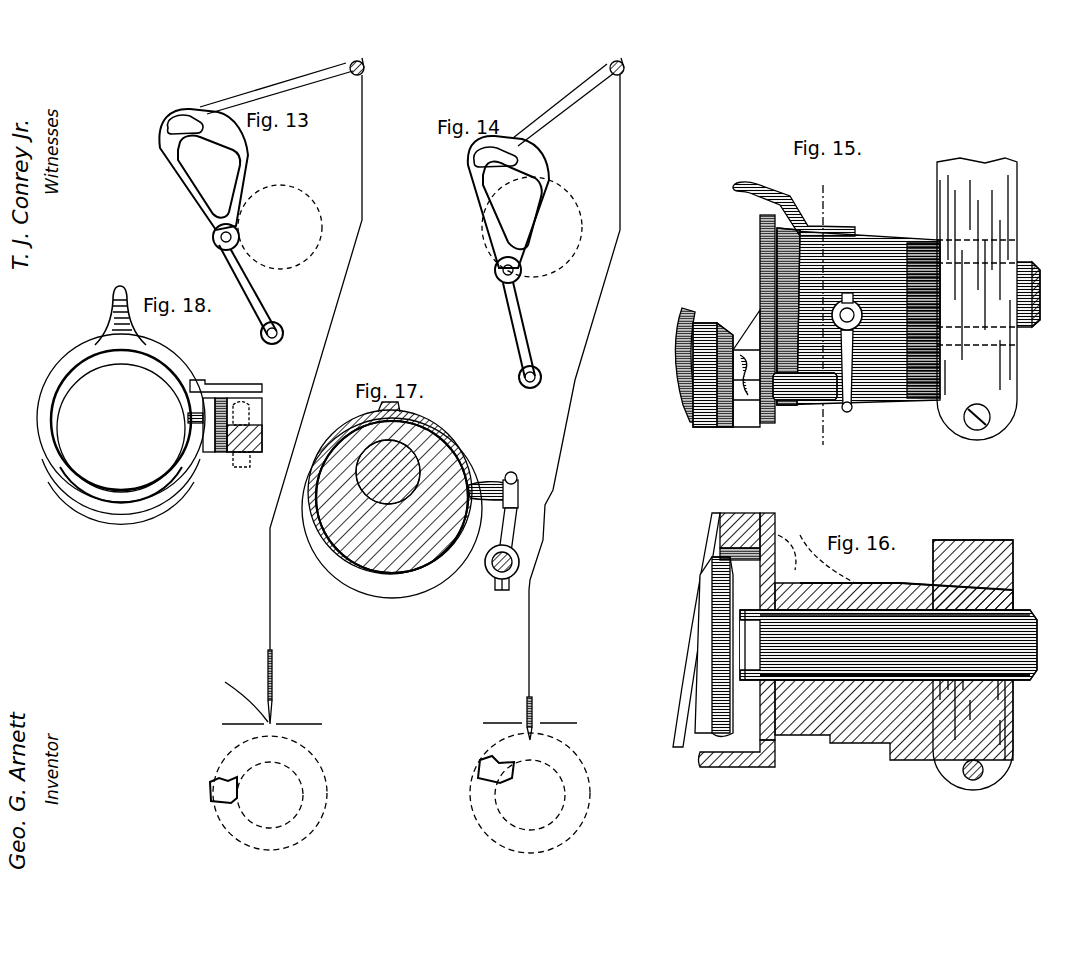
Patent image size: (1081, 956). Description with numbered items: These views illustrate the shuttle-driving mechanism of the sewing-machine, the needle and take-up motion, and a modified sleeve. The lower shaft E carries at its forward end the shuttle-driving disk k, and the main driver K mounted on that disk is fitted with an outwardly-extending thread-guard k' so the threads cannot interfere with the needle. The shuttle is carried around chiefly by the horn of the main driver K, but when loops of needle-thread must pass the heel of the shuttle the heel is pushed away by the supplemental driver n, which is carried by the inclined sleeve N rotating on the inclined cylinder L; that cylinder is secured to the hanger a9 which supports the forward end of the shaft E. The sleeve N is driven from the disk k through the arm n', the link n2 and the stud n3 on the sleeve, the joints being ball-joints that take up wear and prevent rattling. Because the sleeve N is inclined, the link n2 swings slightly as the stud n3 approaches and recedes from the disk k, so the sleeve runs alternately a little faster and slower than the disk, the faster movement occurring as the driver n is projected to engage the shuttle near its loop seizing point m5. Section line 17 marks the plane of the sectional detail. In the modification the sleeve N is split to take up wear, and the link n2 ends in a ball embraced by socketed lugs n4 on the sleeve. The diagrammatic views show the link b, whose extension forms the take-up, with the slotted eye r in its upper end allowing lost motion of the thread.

In FIG. 13, the supplemental driver n is at (203, 169).
In FIG. 14, the supplemental driver n is at (508, 202).
In FIG. 18, the supplemental driver n is at (112, 315).
In FIG. 15, the supplemental driver n is at (794, 195).
In FIG. 16, the supplemental driver n is at (777, 655).
In FIG. 13, the slotted eye r is at (184, 124).
In FIG. 14, the slotted eye r is at (496, 157).
In FIG. 13, the link b is at (255, 300).
In FIG. 14, the link b is at (517, 316).
In FIG. 13, the loop seizing point m5 is at (213, 781).
In FIG. 14, the loop seizing point m5 is at (479, 764).
In FIG. 18, the inclined sleeve N is at (137, 358).
In FIG. 17, the inclined sleeve N is at (393, 574).
In FIG. 15, the inclined sleeve N is at (880, 240).
In FIG. 16, the inclined sleeve N is at (855, 743).
In FIG. 18, the socketed lugs n4 is at (236, 455).
In FIG. 17, the inclined cylinder L is at (345, 560).
In FIG. 15, the inclined cylinder L is at (770, 291).
In FIG. 16, the inclined cylinder L is at (815, 747).
In FIG. 17, the lower shaft E is at (392, 466).
In FIG. 15, the lower shaft E is at (1043, 303).
In FIG. 16, the lower shaft E is at (1038, 657).
In FIG. 17, the stud n3 is at (493, 479).
In FIG. 15, the stud n3 is at (836, 309).
In FIG. 17, the link n2 is at (505, 527).
In FIG. 15, the link n2 is at (867, 330).
In FIG. 17, the arm n' is at (489, 571).
In FIG. 15, the arm n' is at (805, 405).
In FIG. 15, the shuttle-driving disk k is at (752, 319).
In FIG. 16, the shuttle-driving disk k is at (747, 626).
In FIG. 15, the thread-guard k' is at (717, 352).
In FIG. 16, the thread-guard k' is at (682, 630).
In FIG. 16, the main driver K is at (710, 687).
In FIG. 15, the bracket a9 is at (918, 410).
In FIG. 16, the bracket a9 is at (973, 665).
In FIG. 15, the section line for Fig. 17 is at (824, 461).